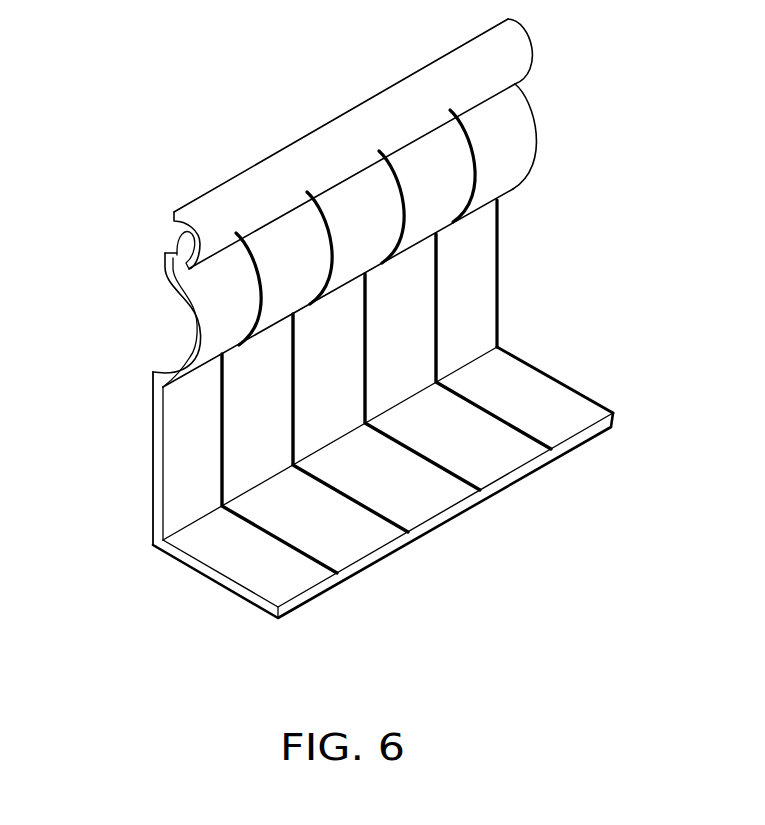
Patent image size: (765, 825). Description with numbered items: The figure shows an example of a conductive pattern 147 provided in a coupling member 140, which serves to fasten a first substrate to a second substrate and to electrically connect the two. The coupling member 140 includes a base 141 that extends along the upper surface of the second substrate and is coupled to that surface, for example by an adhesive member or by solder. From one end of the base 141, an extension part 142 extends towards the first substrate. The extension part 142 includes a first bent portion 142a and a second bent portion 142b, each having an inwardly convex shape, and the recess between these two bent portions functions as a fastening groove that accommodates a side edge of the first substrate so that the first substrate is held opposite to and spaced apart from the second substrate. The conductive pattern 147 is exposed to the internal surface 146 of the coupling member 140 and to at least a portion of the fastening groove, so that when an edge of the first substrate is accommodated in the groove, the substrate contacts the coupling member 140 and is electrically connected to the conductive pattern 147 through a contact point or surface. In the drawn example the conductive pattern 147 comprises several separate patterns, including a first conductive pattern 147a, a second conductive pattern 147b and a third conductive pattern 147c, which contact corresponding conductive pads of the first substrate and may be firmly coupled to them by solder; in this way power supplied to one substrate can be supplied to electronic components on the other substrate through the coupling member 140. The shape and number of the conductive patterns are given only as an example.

The coupling member 140 is at (197, 70).
The base 141 is at (205, 576).
The extension part 142 is at (156, 449).
The first bent portion 142a is at (187, 335).
The second bent portion 142b is at (186, 248).
The internal surface 146 is at (185, 475).
The conductive pattern 147 is at (608, 677).
The first conductive pattern 147a is at (330, 567).
The second conductive pattern 147b is at (393, 522).
The third conductive pattern 147c is at (458, 477).